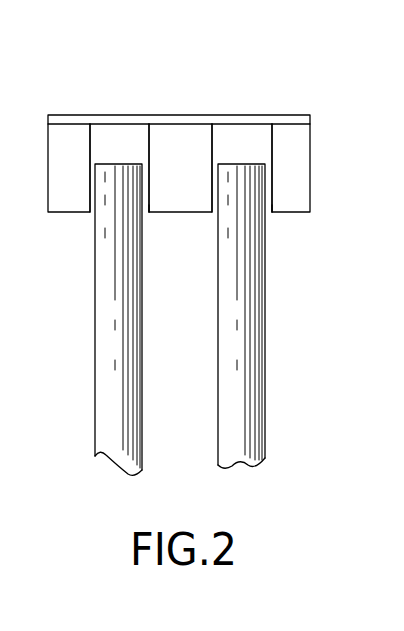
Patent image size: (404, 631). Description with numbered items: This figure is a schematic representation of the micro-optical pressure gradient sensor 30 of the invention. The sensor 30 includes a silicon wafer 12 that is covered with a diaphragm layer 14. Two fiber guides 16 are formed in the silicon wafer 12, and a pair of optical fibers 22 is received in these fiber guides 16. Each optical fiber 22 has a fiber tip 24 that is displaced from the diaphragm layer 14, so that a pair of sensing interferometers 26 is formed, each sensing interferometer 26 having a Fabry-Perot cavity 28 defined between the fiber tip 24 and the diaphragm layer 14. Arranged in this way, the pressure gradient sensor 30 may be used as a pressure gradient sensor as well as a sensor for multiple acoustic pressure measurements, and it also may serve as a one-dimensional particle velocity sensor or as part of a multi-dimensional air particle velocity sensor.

The silicon wafer 12 is at (298, 172).
The diaphragm layer 14 is at (306, 118).
The fiber guide 16 is at (149, 202).
The optical fiber 22 is at (110, 383).
The fiber tip 24 is at (120, 165).
The sensing interferometer 26 is at (88, 146).
The Fabry-Perot cavity 28 is at (121, 143).
The pressure gradient sensor 30 is at (185, 98).